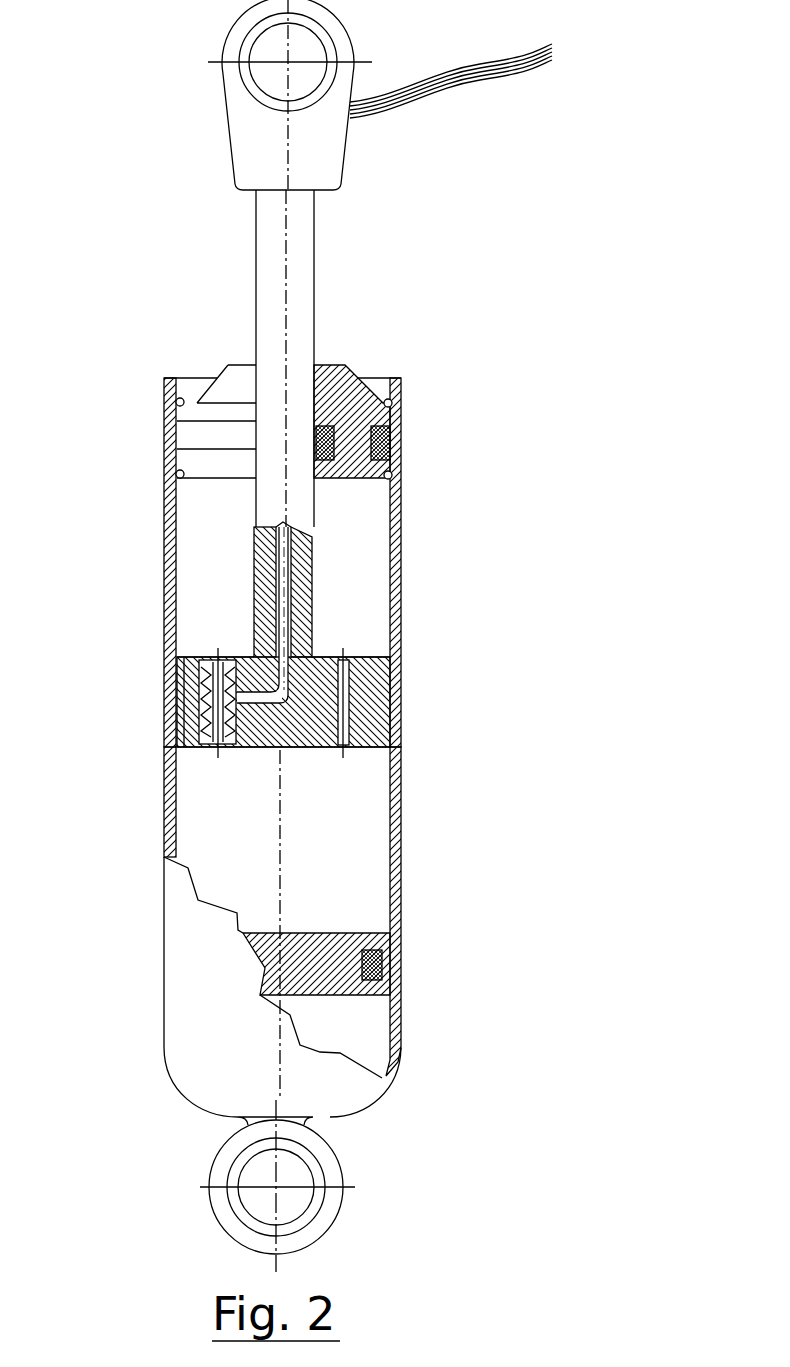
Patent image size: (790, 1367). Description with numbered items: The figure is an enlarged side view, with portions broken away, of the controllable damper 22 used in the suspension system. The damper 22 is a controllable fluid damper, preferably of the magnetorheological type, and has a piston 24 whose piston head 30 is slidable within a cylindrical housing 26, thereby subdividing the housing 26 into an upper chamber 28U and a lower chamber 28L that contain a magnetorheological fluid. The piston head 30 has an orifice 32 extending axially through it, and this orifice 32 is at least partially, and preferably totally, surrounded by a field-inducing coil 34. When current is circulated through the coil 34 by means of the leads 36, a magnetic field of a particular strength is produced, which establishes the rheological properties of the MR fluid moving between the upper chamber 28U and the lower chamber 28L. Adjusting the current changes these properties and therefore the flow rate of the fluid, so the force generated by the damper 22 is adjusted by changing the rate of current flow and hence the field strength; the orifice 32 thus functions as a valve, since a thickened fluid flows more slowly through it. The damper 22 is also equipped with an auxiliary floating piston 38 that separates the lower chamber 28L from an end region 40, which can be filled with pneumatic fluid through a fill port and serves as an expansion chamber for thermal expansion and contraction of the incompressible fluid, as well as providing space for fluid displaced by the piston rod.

The controllable damper 22 is at (398, 543).
The piston 24 is at (250, 567).
The cylindrical housing 26 is at (397, 792).
The upper chamber 28U is at (378, 590).
The lower chamber 28L is at (357, 875).
The piston head 30 is at (362, 652).
The orifice 32 is at (213, 752).
The field-inducing coil 34 is at (203, 658).
The leads 36 is at (548, 43).
The auxiliary floating piston 38 is at (360, 930).
The end region 40 is at (365, 1038).